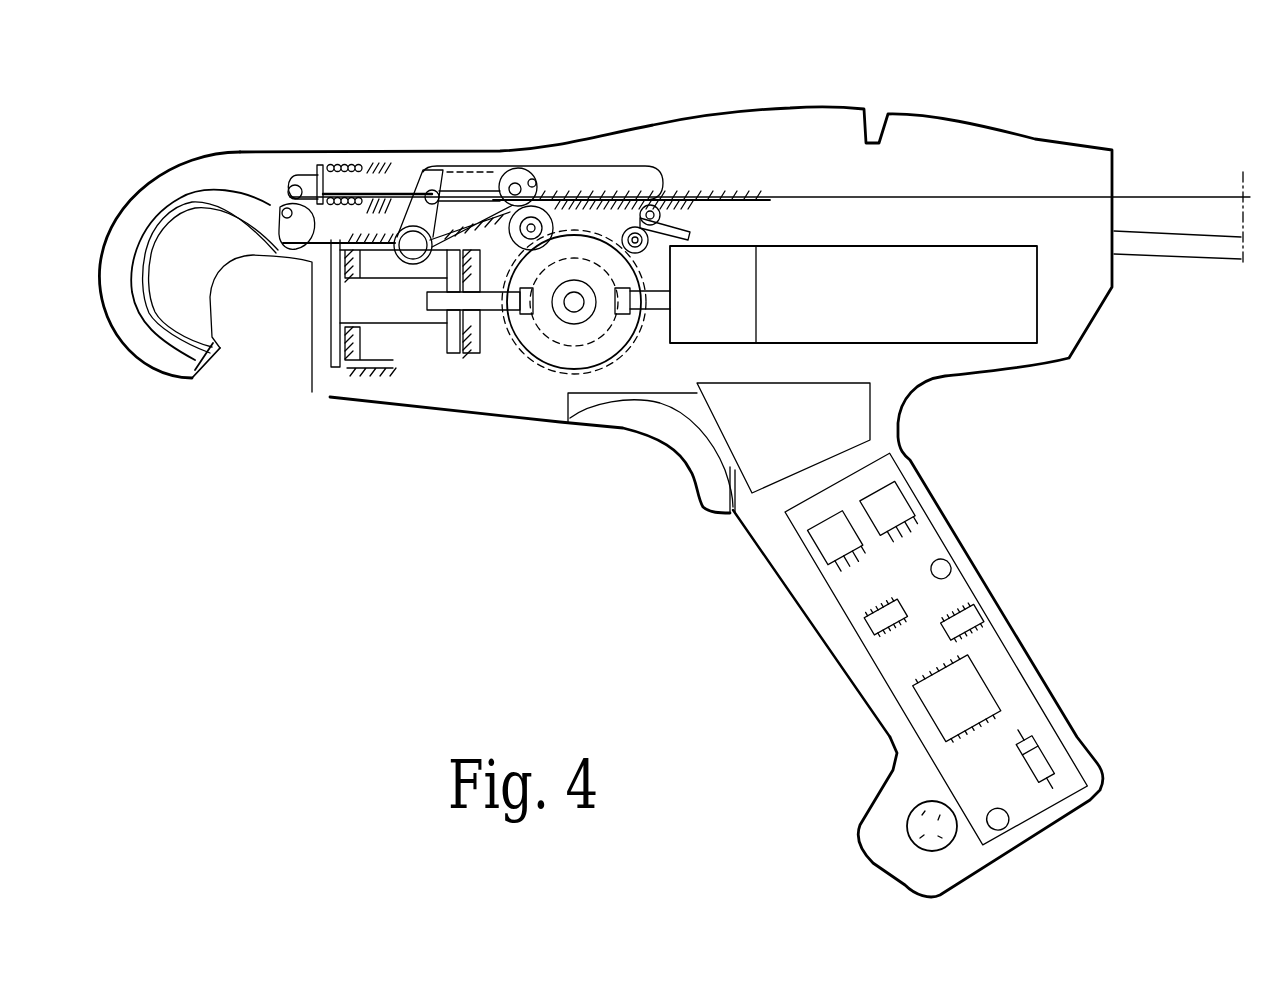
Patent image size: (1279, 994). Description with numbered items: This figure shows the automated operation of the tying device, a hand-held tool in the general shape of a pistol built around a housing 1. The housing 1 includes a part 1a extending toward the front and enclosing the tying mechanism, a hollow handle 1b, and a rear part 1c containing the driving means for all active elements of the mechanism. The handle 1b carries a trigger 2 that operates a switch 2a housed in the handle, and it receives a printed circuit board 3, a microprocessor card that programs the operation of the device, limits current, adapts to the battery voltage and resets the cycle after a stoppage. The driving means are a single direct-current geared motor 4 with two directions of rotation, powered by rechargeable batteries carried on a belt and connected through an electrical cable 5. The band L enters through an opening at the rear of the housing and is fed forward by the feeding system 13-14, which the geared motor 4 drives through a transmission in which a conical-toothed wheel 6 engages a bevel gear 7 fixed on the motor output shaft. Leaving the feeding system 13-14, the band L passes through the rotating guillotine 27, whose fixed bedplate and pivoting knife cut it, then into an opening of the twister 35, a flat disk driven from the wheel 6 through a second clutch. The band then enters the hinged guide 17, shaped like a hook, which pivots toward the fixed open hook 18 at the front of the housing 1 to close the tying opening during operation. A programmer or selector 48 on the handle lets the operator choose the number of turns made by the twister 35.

The housing 1 is at (713, 123).
The front part of housing 1a is at (425, 155).
The hollow handle 1b is at (863, 677).
The rear part of housing 1c is at (955, 240).
The trigger 2 is at (637, 417).
The switch 2a is at (762, 482).
The printed circuit board 3 is at (833, 593).
The direct-current geared motor 4 is at (963, 265).
The electrical cable 5 is at (1190, 243).
The conical-toothed wheel 6 is at (543, 360).
The bevel gear 7 is at (600, 365).
The feeding system 13-14 is at (523, 150).
The hinged guide 17 is at (200, 193).
The fixed open hook 18 is at (195, 383).
The rotating guillotine 27 is at (395, 207).
The twister 35 is at (337, 313).
The programmer or selector 48 is at (907, 823).
The band L is at (1166, 194).